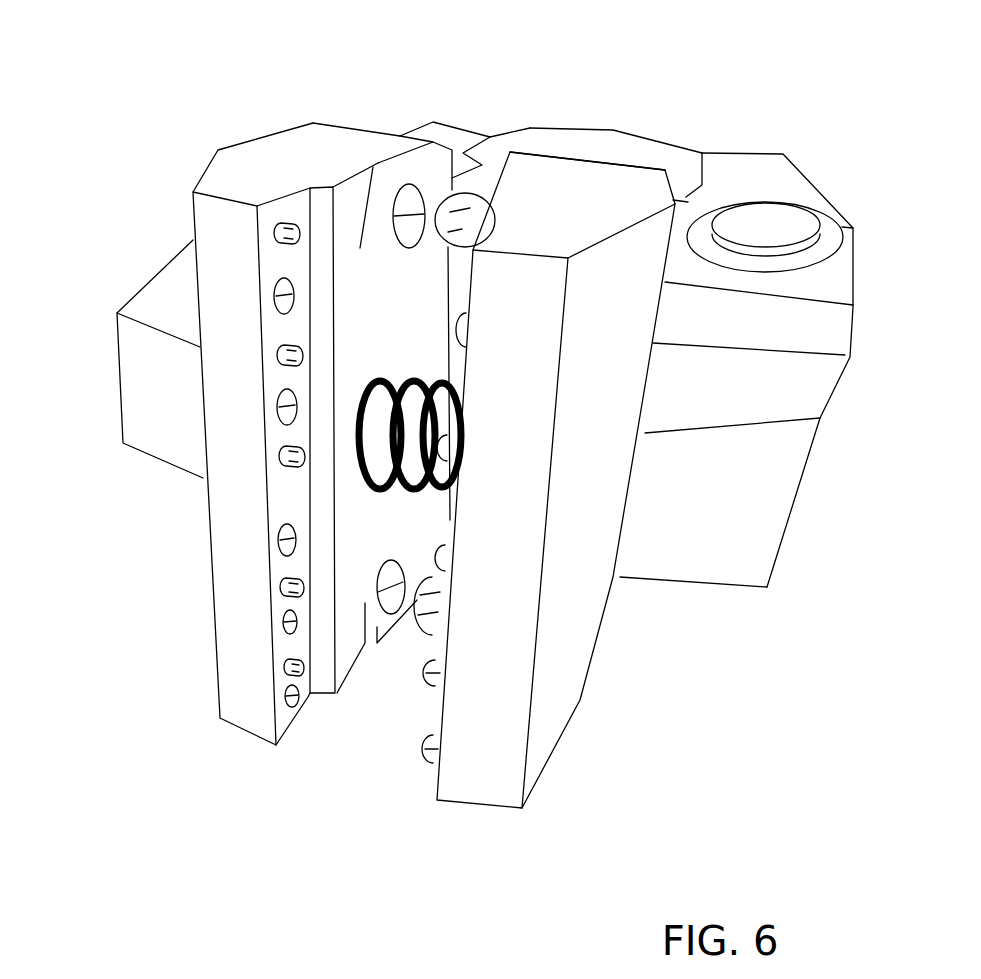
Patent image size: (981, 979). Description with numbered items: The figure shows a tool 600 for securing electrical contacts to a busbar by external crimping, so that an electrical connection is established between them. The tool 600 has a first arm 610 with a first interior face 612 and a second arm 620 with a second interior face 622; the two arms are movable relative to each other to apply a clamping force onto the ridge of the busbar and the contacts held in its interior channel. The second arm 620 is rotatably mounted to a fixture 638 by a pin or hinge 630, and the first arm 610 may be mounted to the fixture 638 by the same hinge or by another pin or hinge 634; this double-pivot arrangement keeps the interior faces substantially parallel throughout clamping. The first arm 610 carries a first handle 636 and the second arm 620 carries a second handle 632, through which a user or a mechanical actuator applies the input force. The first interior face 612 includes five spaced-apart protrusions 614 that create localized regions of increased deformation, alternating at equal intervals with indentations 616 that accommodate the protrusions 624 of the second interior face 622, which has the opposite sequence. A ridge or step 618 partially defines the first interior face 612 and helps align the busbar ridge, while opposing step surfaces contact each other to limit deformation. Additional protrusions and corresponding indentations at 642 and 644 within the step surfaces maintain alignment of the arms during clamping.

The tool 600 is at (548, 840).
The first arm 610 is at (225, 213).
The first interior face 612 is at (277, 493).
The protrusions 614 is at (292, 658).
The indentations 616 is at (275, 293).
The ridge or step 618 is at (320, 202).
The second arm 620 is at (473, 773).
The second interior face 622 is at (430, 717).
The protrusions 624 is at (442, 670).
The pin or hinge 630 is at (792, 228).
The second handle 632 is at (765, 187).
The pin or hinge 634 is at (333, 110).
The first handle 636 is at (441, 135).
The fixture 638 is at (652, 158).
The additional protrusion and/or indentation 642 is at (408, 193).
The additional protrusion and/or indentation 644 is at (480, 203).